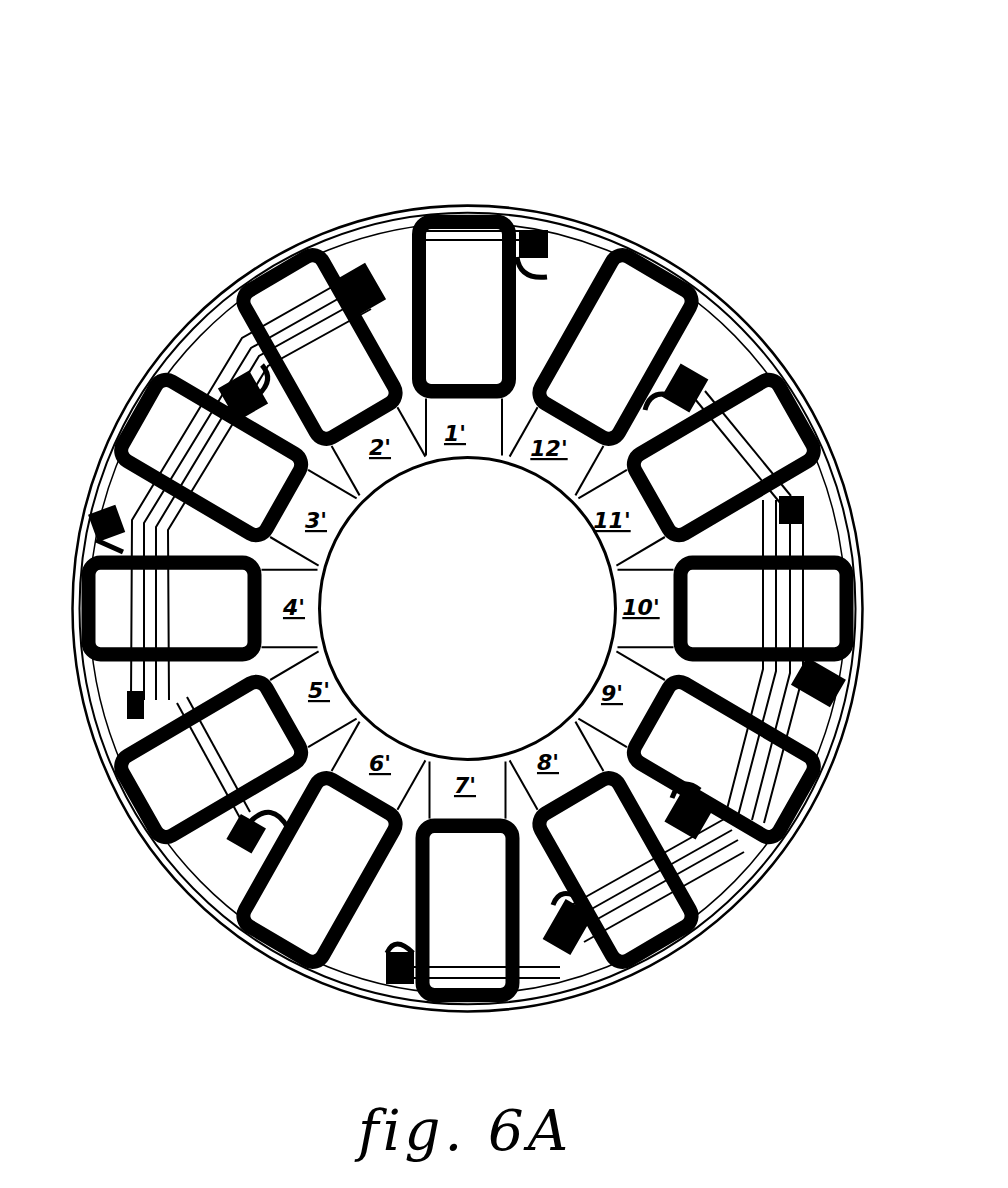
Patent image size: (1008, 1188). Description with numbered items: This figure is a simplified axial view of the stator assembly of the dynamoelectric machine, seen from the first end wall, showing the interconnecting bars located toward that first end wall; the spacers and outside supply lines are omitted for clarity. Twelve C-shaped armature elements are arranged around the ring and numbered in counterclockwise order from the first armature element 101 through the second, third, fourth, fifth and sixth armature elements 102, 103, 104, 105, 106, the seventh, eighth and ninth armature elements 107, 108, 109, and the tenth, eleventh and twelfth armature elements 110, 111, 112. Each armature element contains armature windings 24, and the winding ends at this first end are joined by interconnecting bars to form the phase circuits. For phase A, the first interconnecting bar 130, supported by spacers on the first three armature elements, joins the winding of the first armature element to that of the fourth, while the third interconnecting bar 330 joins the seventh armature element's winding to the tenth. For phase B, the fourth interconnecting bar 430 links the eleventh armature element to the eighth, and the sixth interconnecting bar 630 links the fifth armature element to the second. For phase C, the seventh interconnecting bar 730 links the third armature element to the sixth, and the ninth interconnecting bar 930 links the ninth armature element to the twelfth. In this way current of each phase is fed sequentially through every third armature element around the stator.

The armature windings 24 is at (790, 384).
The first armature element 101 is at (440, 262).
The second armature element 102 is at (302, 270).
The third armature element 103 is at (213, 477).
The fourth armature element 104 is at (110, 606).
The fifth armature element 105 is at (190, 830).
The sixth armature element 106 is at (333, 860).
The seventh armature element 107 is at (463, 938).
The eighth armature element 108 is at (622, 875).
The ninth armature element 109 is at (773, 773).
The tenth armature element 110 is at (858, 703).
The eleventh armature element 111 is at (793, 377).
The twelfth armature element 112 is at (642, 285).
The first interconnecting bar 130 is at (392, 238).
The third interconnecting bar 330 is at (540, 975).
The fourth interconnecting bar 430 is at (835, 470).
The sixth interconnecting bar 630 is at (235, 377).
The seventh interconnecting bar 730 is at (232, 893).
The ninth interconnecting bar 930 is at (708, 387).